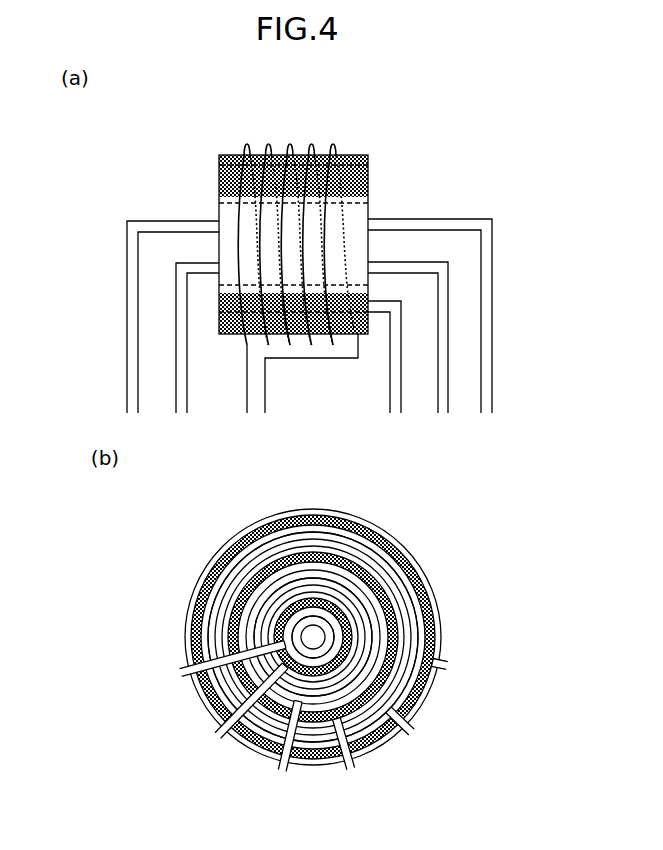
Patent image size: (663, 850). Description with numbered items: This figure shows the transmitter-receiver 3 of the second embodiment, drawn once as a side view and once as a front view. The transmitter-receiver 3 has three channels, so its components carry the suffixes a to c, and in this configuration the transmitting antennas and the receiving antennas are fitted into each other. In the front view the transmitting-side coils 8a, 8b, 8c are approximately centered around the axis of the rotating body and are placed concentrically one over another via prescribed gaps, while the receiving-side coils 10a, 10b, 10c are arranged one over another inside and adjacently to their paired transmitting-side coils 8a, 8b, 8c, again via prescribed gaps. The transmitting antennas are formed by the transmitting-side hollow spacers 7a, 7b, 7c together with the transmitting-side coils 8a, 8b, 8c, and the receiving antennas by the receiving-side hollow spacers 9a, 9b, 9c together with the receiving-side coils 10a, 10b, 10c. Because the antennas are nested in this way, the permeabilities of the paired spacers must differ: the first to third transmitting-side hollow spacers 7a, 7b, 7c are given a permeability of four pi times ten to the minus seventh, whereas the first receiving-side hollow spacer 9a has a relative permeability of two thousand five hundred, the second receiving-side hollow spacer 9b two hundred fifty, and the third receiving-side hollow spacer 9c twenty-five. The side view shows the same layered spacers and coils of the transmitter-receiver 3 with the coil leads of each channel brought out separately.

The transmitter-receiver 3 is at (217, 133).
The first transmitting-side hollow spacer 7a is at (219, 157).
The second transmitting-side hollow spacer 7b is at (268, 578).
The third transmitting-side hollow spacer 7c is at (280, 633).
The first receiving-side hollow spacer 9a is at (368, 203).
The second receiving-side hollow spacer 9b is at (357, 603).
The third receiving-side hollow spacer 9c is at (330, 640).
The first transmitting-side coil 8a is at (492, 268).
The second transmitting-side coil 8b is at (247, 377).
The third transmitting-side coil 8c is at (176, 320).
The first receiving-side coil 10a is at (401, 385).
The second receiving-side coil 10b is at (448, 322).
The third receiving-side coil 10c is at (127, 247).